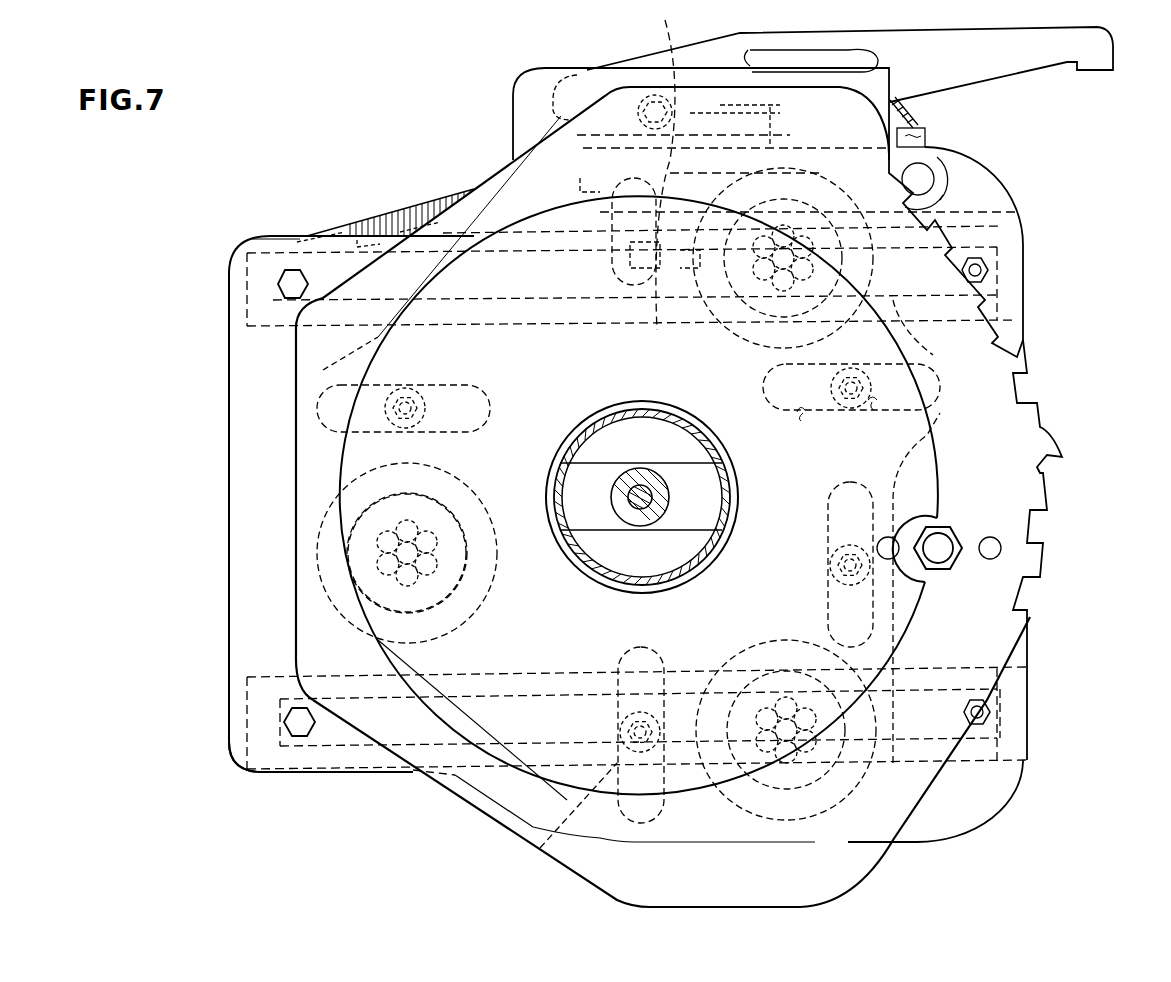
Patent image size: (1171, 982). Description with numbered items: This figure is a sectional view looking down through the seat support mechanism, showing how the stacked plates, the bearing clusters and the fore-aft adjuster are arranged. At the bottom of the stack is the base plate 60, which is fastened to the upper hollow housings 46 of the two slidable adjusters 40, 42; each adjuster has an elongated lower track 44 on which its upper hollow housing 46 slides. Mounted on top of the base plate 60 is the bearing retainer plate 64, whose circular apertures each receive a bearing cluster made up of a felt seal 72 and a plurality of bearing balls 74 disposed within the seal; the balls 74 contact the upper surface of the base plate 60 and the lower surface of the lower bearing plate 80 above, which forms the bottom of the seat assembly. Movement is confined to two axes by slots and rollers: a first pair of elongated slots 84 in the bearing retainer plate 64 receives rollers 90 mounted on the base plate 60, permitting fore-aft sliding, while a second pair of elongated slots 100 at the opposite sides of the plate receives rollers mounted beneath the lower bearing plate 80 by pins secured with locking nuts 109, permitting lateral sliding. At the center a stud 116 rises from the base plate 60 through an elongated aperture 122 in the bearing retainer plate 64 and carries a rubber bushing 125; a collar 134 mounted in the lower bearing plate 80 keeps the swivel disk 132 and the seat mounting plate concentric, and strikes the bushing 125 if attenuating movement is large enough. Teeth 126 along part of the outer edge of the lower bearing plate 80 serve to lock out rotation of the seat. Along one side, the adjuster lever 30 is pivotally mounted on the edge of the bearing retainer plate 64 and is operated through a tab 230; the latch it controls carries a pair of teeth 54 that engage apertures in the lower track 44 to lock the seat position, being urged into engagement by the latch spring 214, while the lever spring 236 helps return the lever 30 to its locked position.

The adjuster lever 30 is at (1014, 58).
The slidable adjuster 40 is at (249, 236).
The slidable adjuster 42 is at (250, 767).
The lower track 44 is at (280, 722).
The upper hollow housing 46 is at (247, 681).
The teeth 54 is at (965, 148).
The base plate 60 is at (238, 386).
The bearing retainer plate 64 is at (977, 787).
The felt seal 72 is at (360, 585).
The bearing balls 74 is at (345, 546).
The lower bearing plate 80 is at (970, 627).
The elongated slots 84 is at (803, 414).
The rollers 90 is at (872, 410).
The elongated slots 100 is at (614, 672).
The locking nuts 109 is at (533, 852).
The stud 116 is at (643, 507).
The elongated aperture 122 is at (667, 465).
The rubber bushing 125 is at (618, 467).
The teeth 126 is at (1058, 452).
The swivel disk 132 is at (468, 283).
The collar 134 is at (667, 578).
The latch spring 214 is at (370, 235).
The tab 230 is at (1098, 70).
The lever spring 236 is at (900, 112).